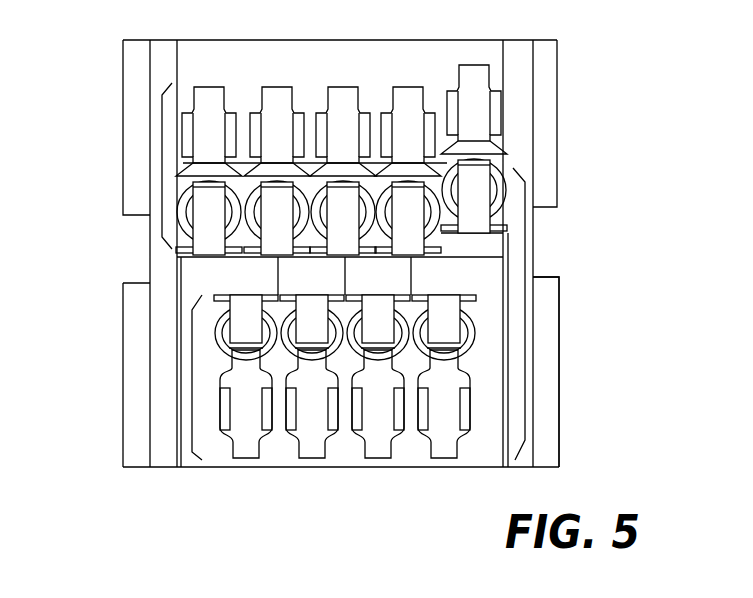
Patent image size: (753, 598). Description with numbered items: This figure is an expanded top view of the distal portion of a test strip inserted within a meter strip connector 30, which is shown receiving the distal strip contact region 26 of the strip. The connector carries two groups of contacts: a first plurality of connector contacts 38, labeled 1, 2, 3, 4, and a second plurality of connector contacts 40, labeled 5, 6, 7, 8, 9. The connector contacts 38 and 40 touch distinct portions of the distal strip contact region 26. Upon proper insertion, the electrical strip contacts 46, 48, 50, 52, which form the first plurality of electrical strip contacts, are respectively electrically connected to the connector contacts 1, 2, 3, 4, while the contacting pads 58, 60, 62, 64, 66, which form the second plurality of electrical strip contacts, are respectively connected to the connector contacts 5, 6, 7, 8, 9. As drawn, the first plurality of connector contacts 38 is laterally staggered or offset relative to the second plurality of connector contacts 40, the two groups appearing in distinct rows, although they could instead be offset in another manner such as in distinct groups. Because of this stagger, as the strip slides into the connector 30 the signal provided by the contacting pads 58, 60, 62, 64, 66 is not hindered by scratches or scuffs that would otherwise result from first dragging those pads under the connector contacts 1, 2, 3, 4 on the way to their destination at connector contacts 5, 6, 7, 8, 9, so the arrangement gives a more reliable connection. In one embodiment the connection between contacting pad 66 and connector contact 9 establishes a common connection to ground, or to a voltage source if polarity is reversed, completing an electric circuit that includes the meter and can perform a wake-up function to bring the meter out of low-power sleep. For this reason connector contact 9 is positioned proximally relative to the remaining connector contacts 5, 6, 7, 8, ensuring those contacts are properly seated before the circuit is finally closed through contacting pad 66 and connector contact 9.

The distal strip contact region 26 is at (527, 315).
The meter strip connector 30 is at (135, 120).
The first plurality of connector contacts 38 is at (192, 383).
The second plurality of connector contacts 40 is at (158, 173).
The electrical strip contact 46 is at (234, 411).
The electrical strip contact 48 is at (290, 411).
The electrical strip contact 50 is at (356, 411).
The electrical strip contact 52 is at (424, 411).
The contacting pad 58 is at (218, 149).
The contacting pad 60 is at (283, 149).
The contacting pad 62 is at (346, 149).
The contacting pad 64 is at (410, 149).
The contacting pad 66 is at (483, 233).
The connector contact 1 is at (246, 321).
The connector contact 2 is at (312, 321).
The connector contact 3 is at (378, 321).
The connector contact 4 is at (444, 321).
The connector contact 5 is at (209, 218).
The connector contact 6 is at (277, 218).
The connector contact 7 is at (343, 218).
The connector contact 8 is at (408, 218).
The connector contact 9 is at (474, 149).